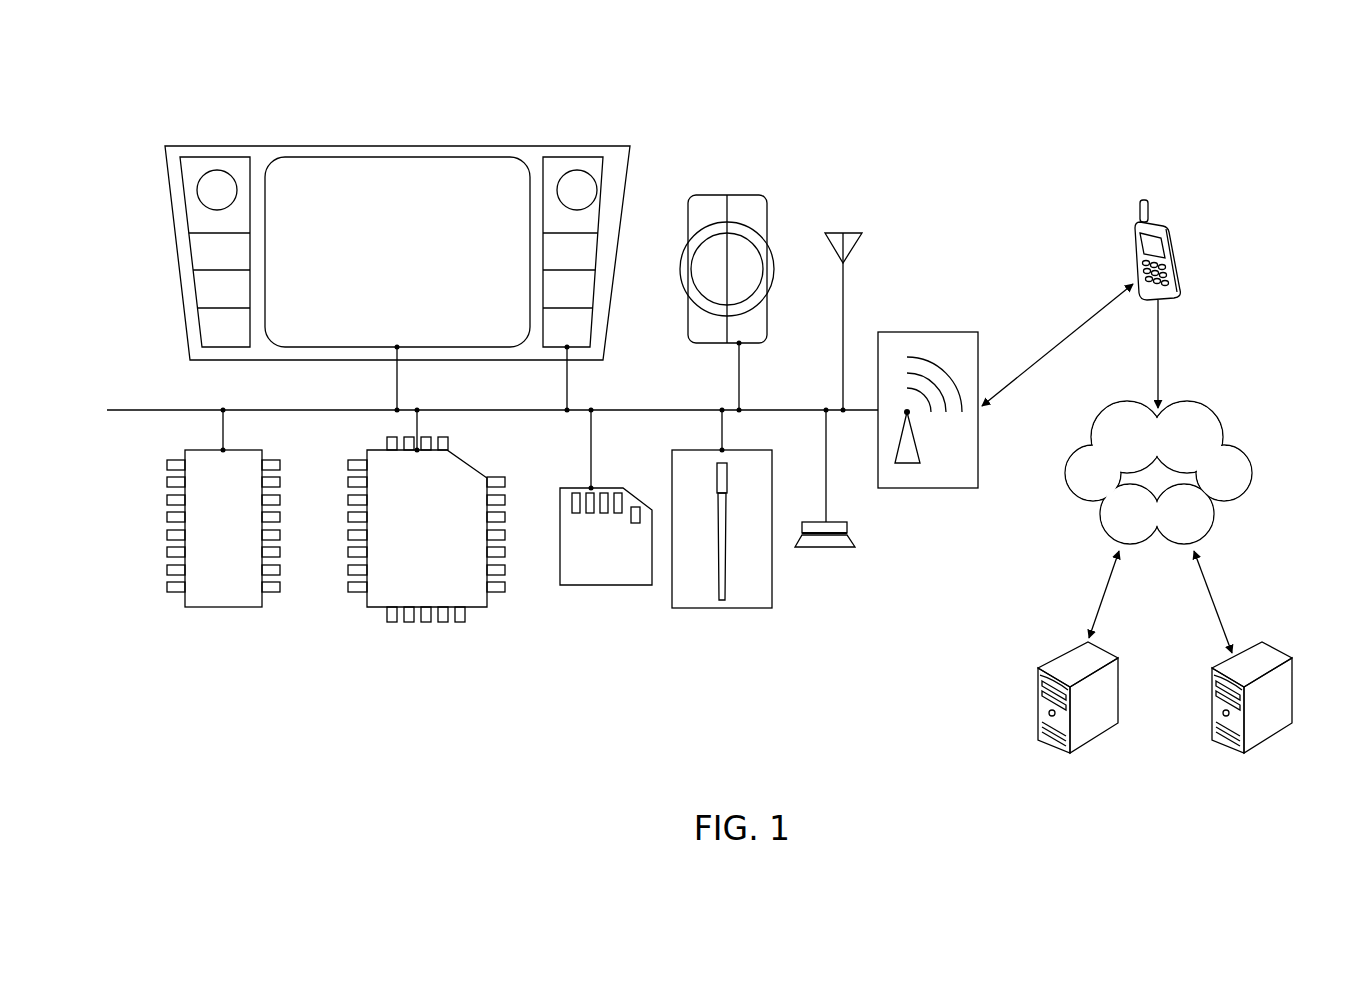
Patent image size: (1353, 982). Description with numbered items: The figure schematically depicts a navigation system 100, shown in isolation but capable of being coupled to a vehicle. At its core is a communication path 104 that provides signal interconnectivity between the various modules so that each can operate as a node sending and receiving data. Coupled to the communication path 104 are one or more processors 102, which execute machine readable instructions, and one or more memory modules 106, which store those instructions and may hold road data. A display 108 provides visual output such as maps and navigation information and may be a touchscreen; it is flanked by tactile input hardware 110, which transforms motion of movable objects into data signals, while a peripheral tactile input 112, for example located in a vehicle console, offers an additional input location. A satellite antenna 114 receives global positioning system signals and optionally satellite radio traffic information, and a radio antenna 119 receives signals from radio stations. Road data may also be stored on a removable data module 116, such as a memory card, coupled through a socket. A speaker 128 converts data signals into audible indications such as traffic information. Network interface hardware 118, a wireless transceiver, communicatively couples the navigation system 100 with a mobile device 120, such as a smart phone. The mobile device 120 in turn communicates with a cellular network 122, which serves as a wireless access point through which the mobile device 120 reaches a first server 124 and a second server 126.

The navigation system 100 is at (1118, 161).
The processors 102 is at (377, 607).
The communication path 104 is at (140, 412).
The memory modules 106 is at (223, 607).
The display 108 is at (398, 170).
The tactile input hardware 110 is at (183, 160).
The peripheral tactile input 112 is at (713, 195).
The satellite antenna 114 is at (722, 608).
The removable data module 116 is at (608, 585).
The network interface hardware 118 is at (930, 332).
The radio antenna 119 is at (850, 233).
The mobile device 120 is at (1170, 224).
The cellular network 122 is at (1190, 401).
The first server 124 is at (1068, 654).
The second server 126 is at (1277, 654).
The speaker 128 is at (830, 548).